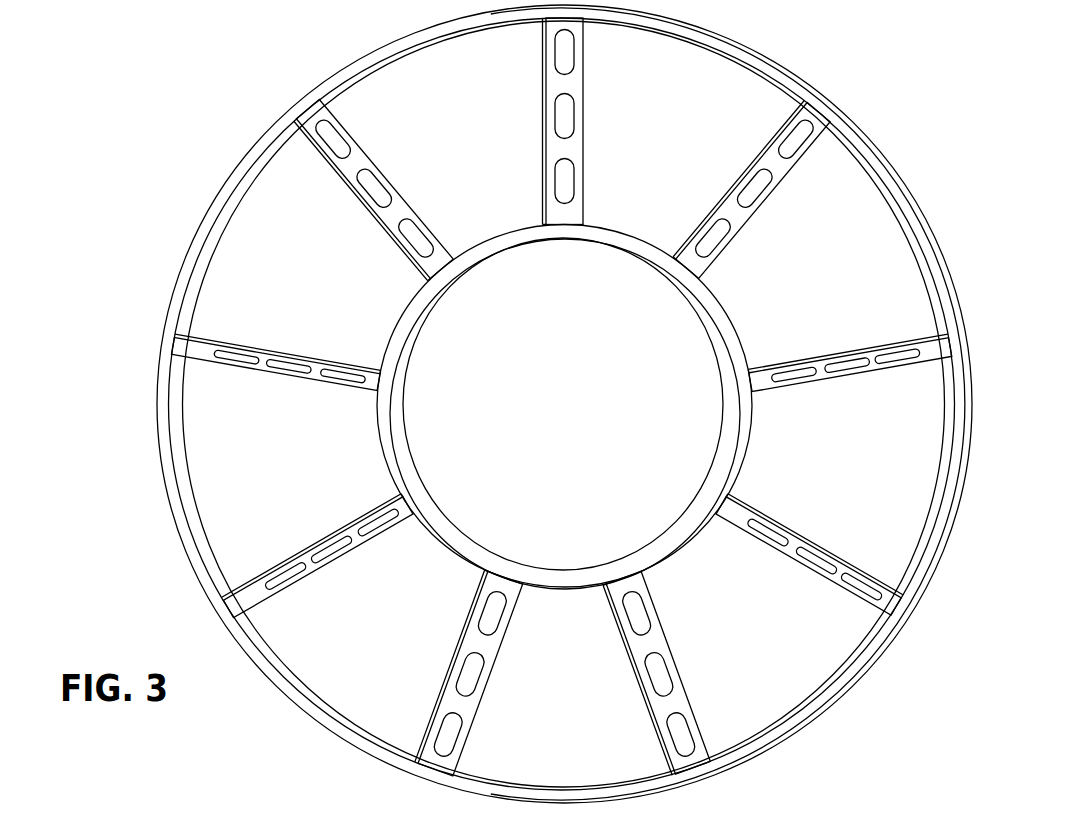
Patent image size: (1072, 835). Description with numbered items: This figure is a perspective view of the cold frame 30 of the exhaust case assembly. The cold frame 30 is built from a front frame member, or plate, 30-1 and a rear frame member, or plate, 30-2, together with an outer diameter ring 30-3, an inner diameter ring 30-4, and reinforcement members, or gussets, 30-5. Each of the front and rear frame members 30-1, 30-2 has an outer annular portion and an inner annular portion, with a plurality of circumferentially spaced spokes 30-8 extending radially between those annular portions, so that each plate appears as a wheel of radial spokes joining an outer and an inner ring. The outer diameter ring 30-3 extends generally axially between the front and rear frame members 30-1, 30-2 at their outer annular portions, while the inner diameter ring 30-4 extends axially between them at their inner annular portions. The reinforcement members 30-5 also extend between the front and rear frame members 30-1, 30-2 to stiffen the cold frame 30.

The cold frame 30 is at (224, 101).
The front frame member 30-1 is at (930, 533).
The rear frame member 30-2 is at (963, 461).
The outer diameter (OD) ring 30-3 is at (962, 391).
The inner diameter (ID) ring 30-4 is at (742, 444).
The reinforcement member 30-5 is at (653, 673).
The spoke 30-8 is at (657, 734).